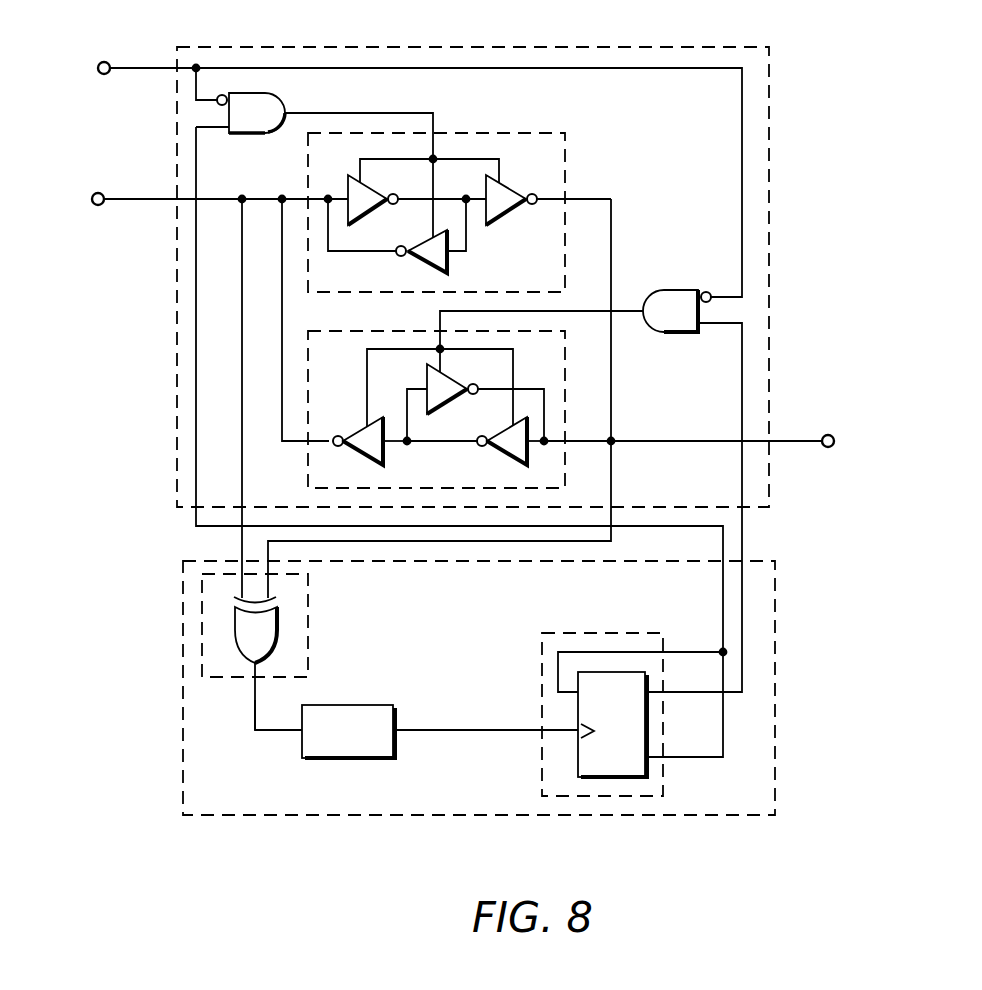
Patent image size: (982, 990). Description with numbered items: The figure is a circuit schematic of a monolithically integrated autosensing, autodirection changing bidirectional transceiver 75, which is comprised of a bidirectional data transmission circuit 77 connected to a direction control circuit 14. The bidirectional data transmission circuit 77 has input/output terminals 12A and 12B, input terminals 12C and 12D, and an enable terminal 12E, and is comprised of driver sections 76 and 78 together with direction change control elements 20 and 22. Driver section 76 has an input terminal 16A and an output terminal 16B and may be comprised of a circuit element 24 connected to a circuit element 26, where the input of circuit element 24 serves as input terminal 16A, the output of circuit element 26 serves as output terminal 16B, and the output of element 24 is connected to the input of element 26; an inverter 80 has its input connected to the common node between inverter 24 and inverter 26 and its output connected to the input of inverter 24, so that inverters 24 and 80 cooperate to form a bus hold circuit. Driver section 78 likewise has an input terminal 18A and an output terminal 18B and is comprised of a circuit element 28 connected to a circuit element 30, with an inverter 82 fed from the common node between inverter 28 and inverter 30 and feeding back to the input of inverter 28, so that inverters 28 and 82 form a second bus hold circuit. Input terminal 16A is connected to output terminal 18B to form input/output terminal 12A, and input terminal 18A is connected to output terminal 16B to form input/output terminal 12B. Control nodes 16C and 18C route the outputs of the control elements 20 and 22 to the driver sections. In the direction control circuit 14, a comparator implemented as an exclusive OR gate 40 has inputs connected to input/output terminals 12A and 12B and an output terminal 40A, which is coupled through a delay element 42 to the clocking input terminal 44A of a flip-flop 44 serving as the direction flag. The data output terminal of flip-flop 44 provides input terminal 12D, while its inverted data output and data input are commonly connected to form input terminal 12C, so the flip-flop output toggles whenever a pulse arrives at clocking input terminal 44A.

The enable terminal 12E is at (104, 62).
The input/output terminal 12A is at (98, 193).
The input/output terminal 12B is at (832, 436).
The input terminal 12C is at (723, 612).
The input terminal 12D is at (690, 693).
The direction control circuit 14 is at (776, 633).
The input terminal 16A is at (303, 197).
The output terminal 16B is at (578, 198).
The first latch control node 16C is at (433, 122).
The input terminal 18A is at (578, 441).
The output terminal 18B is at (300, 446).
The second latch control node 18C is at (440, 322).
The direction change control element 20 is at (256, 135).
The direction change control element 22 is at (684, 333).
The circuit element 24 is at (372, 214).
The inverter 26 is at (512, 214).
The inverter 28 is at (510, 460).
The circuit element 30 is at (366, 462).
The exclusive OR gate 40 is at (310, 625).
The output terminal 40A is at (253, 707).
The delay element 42 is at (336, 762).
The flip-flop 44 is at (582, 633).
The clocking input terminal 44A is at (457, 727).
The bidirectional transceiver 75 is at (768, 875).
The driver section 76 is at (530, 133).
The bidirectional data transmission circuit 77 is at (770, 150).
The driver section 78 is at (343, 331).
The inverter 80 is at (422, 266).
The inverter 82 is at (453, 406).